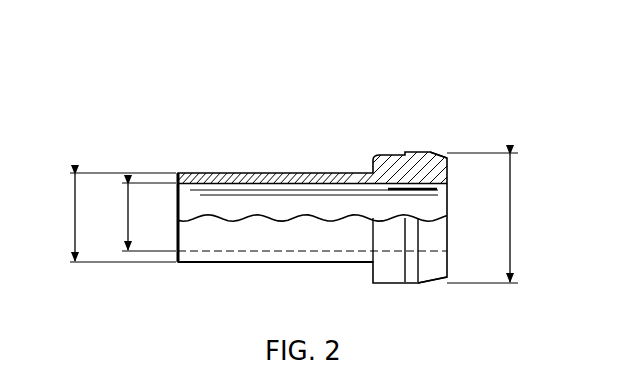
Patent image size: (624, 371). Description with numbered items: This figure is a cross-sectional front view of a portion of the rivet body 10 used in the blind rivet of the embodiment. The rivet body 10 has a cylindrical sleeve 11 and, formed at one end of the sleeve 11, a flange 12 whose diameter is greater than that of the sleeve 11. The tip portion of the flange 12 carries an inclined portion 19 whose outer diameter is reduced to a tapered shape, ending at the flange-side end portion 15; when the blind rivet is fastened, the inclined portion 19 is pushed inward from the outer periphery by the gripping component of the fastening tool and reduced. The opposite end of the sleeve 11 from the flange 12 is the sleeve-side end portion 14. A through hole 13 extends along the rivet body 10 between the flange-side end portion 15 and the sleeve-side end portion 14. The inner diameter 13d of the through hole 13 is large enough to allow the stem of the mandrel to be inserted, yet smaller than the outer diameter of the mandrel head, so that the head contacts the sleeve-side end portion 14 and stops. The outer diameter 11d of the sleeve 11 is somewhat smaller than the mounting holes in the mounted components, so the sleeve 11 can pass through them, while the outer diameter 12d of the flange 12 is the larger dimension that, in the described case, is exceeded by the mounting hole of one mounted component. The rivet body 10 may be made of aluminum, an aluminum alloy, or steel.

The rivet body 10 is at (352, 97).
The sleeve 11 is at (240, 172).
The flange 12 is at (385, 153).
The through hole 13 is at (420, 190).
The sleeve-side end portion 14 is at (177, 172).
The flange-side end portion 15 is at (448, 173).
The inclined portion 19 is at (428, 153).
The outer diameter of the sleeve 11d is at (104, 217).
The inner diameter of the through hole 13d is at (132, 217).
The outer diameter of the flange 12d is at (497, 218).